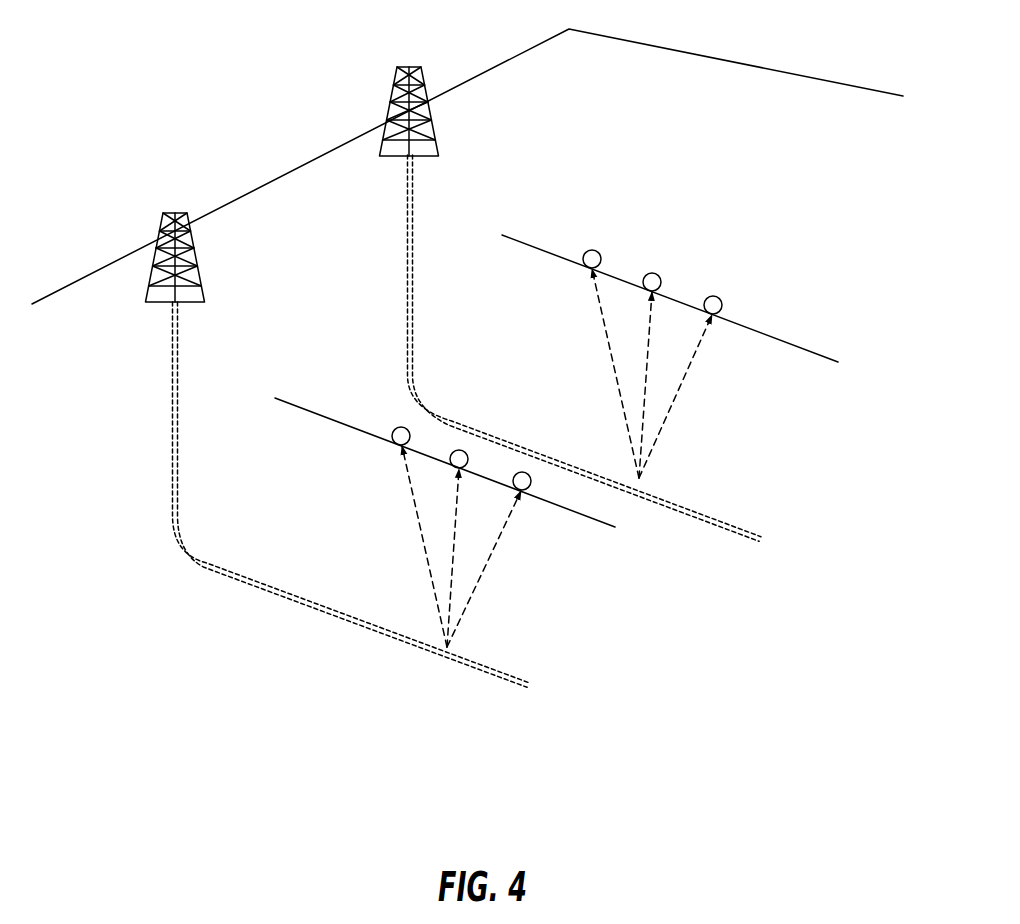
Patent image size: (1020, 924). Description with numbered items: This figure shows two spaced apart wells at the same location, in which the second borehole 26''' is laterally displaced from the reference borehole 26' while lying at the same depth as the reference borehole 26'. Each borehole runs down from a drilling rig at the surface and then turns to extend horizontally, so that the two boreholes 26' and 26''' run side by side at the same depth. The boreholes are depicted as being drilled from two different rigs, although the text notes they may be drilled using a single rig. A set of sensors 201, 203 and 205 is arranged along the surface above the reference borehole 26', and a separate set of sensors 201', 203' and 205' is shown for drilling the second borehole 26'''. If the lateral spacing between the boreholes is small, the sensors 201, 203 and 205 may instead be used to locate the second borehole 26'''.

The sensor 201 is at (390, 520).
The sensor 203 is at (495, 525).
The sensor 205 is at (543, 559).
The sensor 201' is at (625, 347).
The sensor 203' is at (683, 358).
The sensor 205' is at (714, 368).
The reference borehole 26' is at (378, 522).
The second borehole 26''' is at (607, 372).